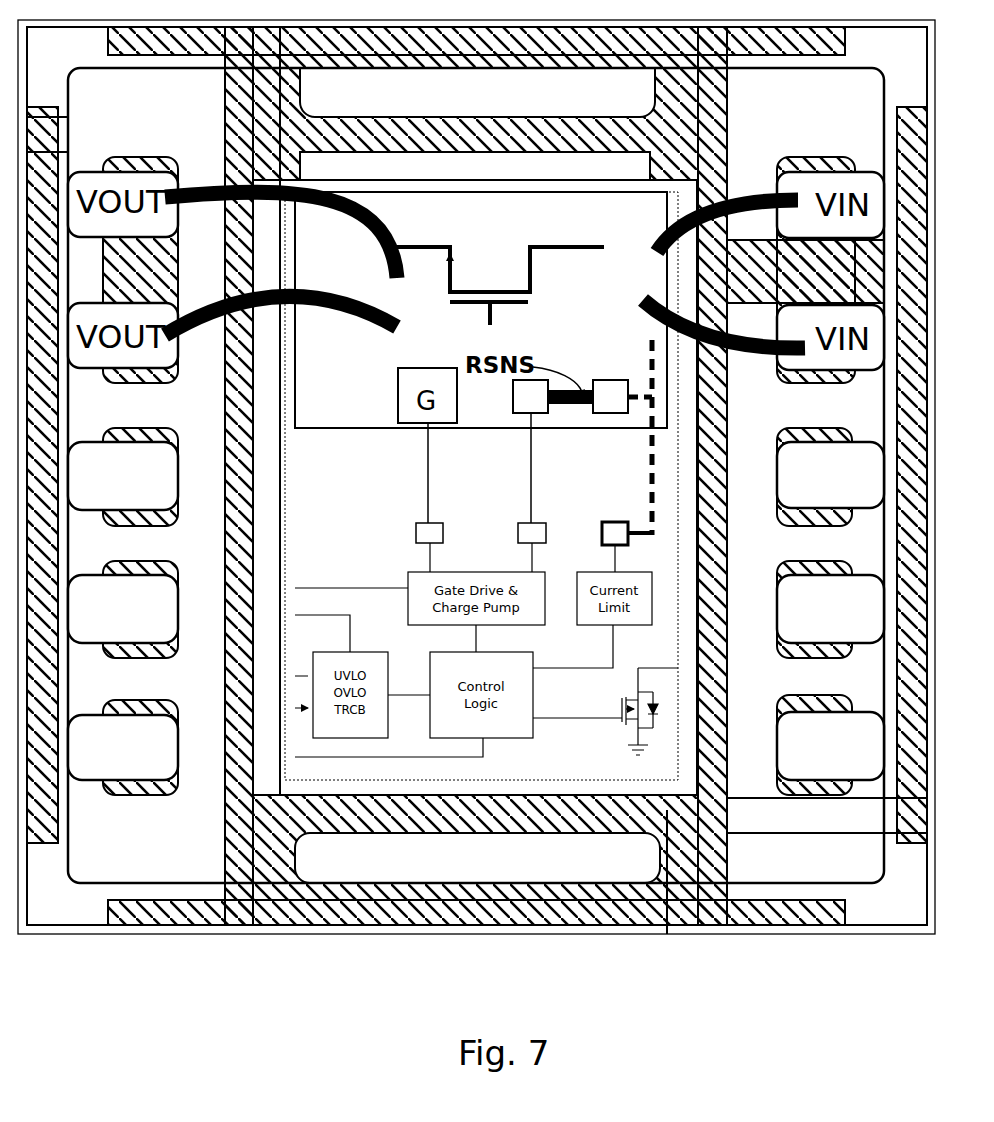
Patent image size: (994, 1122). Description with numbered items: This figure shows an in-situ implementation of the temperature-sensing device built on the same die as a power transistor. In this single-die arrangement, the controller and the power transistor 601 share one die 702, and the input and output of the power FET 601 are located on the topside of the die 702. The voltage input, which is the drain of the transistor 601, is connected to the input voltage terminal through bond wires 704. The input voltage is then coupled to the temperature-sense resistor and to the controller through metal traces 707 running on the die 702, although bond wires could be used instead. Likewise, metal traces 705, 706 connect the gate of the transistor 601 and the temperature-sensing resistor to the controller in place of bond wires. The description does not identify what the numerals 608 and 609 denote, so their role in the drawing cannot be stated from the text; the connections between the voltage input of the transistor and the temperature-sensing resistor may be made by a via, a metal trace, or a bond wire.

The lead frame 608 is at (728, 88).
The bond wires 704 is at (738, 193).
The bond clip 609 is at (348, 195).
The power transistor 601 is at (481, 310).
The die 702 is at (488, 487).
The metal trace 705 is at (430, 470).
The metal trace 706 is at (535, 490).
The metal traces 707 is at (652, 438).